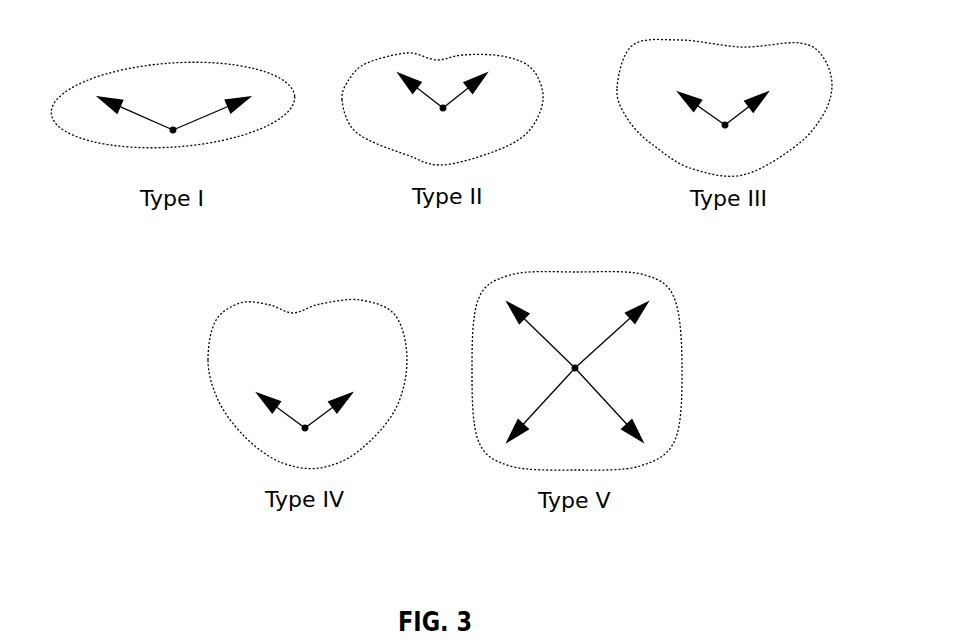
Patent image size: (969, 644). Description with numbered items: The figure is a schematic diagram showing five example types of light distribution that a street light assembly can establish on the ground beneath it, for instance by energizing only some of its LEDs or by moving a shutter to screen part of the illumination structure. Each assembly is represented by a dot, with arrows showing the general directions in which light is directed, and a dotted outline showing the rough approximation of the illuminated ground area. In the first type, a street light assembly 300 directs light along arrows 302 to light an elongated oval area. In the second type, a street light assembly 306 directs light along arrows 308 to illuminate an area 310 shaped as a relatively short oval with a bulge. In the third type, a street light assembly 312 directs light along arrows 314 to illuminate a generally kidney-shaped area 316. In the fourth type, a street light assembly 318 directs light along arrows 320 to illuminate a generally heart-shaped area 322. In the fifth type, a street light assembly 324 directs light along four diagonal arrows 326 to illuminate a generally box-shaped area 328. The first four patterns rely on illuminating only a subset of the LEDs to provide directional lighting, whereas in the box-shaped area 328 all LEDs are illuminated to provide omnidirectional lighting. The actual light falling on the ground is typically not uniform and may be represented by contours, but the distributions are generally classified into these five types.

The street light assembly 300 is at (176, 133).
The arrows 302 is at (207, 118).
The street light assembly 306 is at (158, 65).
The arrows 308 is at (427, 97).
The area 310 is at (383, 55).
The street light assembly 312 is at (725, 127).
The arrows 314 is at (745, 117).
The area 316 is at (823, 55).
The street light assembly 318 is at (307, 430).
The arrows 320 is at (275, 405).
The area 322 is at (235, 307).
The street light assembly 324 is at (578, 369).
The arrows 326 is at (612, 405).
The area 328 is at (668, 292).